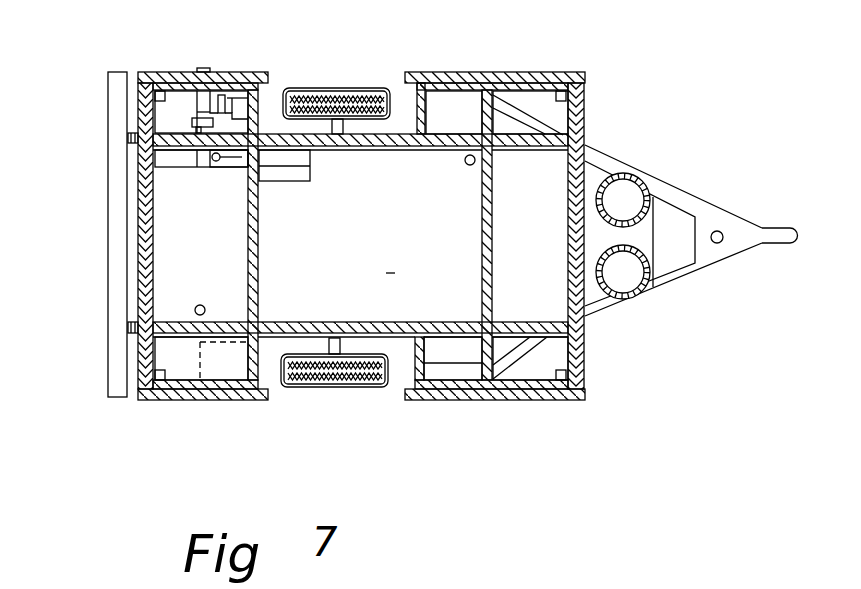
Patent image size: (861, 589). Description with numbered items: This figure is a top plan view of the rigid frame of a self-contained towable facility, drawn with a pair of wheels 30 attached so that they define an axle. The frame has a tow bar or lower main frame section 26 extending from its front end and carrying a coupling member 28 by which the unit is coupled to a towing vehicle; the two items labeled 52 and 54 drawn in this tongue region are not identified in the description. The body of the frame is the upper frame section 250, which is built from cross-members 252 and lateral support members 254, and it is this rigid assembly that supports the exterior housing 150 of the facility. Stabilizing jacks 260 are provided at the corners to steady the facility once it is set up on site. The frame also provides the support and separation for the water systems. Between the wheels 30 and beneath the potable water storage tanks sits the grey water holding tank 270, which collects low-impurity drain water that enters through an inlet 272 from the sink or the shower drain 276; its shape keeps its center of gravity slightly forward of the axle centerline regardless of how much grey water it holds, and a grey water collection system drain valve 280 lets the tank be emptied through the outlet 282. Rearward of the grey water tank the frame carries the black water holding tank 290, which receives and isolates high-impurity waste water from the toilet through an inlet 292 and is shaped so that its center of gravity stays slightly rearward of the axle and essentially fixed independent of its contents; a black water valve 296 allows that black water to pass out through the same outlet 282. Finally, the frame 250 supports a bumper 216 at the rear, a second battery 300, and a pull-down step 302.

The bumper 216 is at (108, 152).
The upper frame section 250 is at (547, 84).
The cross-members 252 is at (250, 240).
The exterior housing 150 is at (582, 120).
The black water holding tank 290 is at (172, 272).
The lateral support members 254 is at (434, 140).
The stabilizing jacks 260 is at (162, 93).
The outlet 282 is at (205, 68).
The grey water collection system drain valve 280 is at (222, 96).
The black water valve 296 is at (190, 120).
The shower drain 276 is at (218, 154).
The inlet 272 is at (471, 155).
The wheels 30 is at (332, 92).
The second battery 300 is at (222, 366).
The pull-down step 302 is at (457, 372).
The inlet 292 is at (196, 313).
The grey water holding tank 270 is at (393, 273).
The tow bar or lower main frame section 26 is at (690, 272).
The coupling member 28 is at (792, 244).
The jack pin 54 is at (720, 233).
The wheels 52 is at (632, 178).